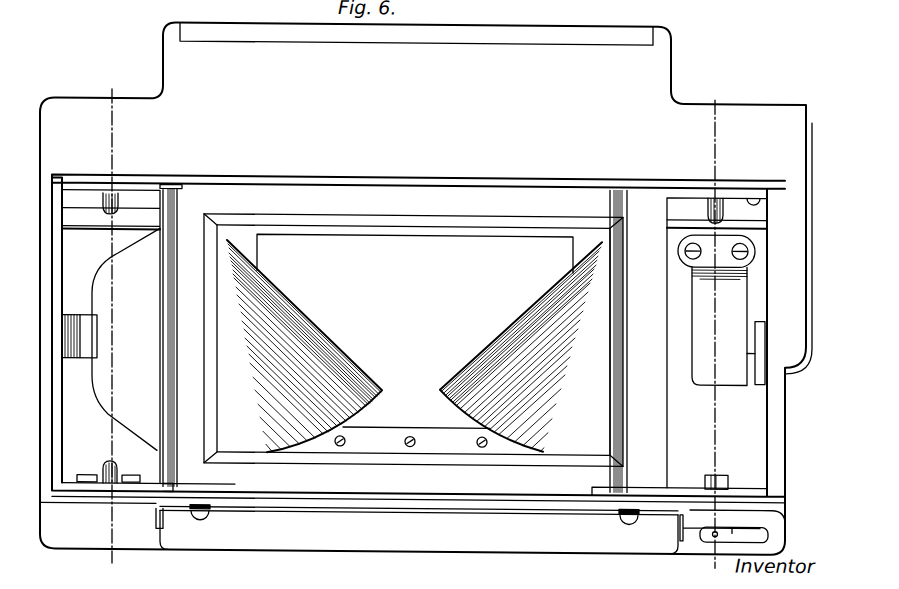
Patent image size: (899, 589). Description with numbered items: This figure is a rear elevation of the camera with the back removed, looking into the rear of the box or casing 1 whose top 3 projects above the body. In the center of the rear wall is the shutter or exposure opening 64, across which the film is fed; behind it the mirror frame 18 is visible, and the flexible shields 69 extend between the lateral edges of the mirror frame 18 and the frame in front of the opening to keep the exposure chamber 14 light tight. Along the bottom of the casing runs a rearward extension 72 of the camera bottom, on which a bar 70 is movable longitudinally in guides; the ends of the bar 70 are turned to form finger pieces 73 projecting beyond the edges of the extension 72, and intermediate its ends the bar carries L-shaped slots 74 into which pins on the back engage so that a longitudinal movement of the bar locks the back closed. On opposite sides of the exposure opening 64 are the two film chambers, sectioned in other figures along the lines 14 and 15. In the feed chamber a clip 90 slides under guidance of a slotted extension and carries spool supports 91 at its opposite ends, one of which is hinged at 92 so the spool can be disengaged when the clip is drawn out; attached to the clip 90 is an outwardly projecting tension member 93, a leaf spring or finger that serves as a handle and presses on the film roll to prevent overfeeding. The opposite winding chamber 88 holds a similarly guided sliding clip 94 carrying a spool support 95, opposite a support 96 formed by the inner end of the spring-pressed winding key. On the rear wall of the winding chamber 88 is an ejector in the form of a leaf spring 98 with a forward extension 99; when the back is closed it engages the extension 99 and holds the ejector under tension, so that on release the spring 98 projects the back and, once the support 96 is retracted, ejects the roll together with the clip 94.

The box or casing 1 is at (418, 322).
The top 3 is at (594, 33).
The exposure chamber 14 is at (102, 320).
The section line 15- 15 is at (712, 328).
The mirror frame 18 is at (415, 341).
The shutter or exposure opening 64 is at (538, 223).
The shields 69 is at (414, 347).
The bar 70 is at (247, 512).
The rearward extension 72 is at (419, 534).
The finger pieces 73 is at (682, 529).
The L-shaped slots 74 is at (628, 520).
The winding chamber 88 is at (717, 343).
The clip 90 is at (111, 337).
The spool supports 91 is at (114, 213).
The hinge 92 is at (132, 474).
The tension member 93 is at (97, 334).
The sliding plate or clip 94 is at (688, 192).
The spool support 95 is at (709, 208).
The support 96 is at (708, 472).
The leaf spring 98 is at (716, 310).
The forward extension 99 is at (756, 334).